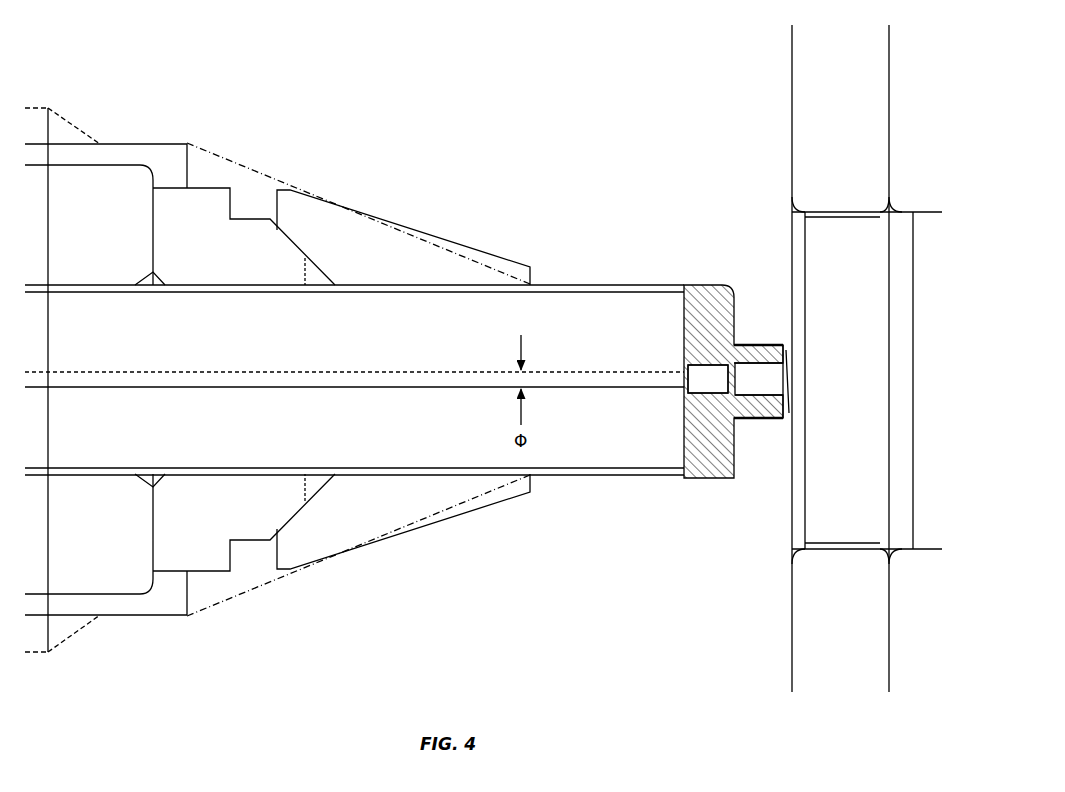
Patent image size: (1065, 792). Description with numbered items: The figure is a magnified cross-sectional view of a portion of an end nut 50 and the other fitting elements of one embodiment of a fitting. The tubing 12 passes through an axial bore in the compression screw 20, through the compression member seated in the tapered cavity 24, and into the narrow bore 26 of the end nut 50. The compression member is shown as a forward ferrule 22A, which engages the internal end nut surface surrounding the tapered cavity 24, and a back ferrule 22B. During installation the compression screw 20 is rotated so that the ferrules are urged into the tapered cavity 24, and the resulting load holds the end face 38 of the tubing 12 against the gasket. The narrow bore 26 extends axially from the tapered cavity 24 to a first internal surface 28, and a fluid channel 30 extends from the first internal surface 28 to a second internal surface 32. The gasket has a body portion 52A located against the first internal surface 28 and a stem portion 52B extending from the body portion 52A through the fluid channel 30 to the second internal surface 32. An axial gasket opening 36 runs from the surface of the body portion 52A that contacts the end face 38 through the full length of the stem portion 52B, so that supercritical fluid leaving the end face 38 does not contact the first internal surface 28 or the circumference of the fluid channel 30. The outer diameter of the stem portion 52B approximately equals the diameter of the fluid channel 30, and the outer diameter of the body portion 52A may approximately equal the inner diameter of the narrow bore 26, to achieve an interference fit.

The tubing 12 is at (543, 302).
The compression screw 20 is at (126, 594).
The forward ferrule 22A is at (315, 208).
The back ferrule 22B is at (195, 195).
The tapered cavity 24 is at (245, 583).
The narrow bore 26 is at (597, 478).
The first internal surface 28 is at (729, 433).
The fluid channel 30 is at (748, 345).
The second internal surface 32 is at (787, 435).
The bore 36 is at (707, 367).
The end face 38 is at (682, 448).
The end nut 50 is at (597, 153).
The body portion 52A is at (708, 480).
The stem portion 52B is at (772, 345).